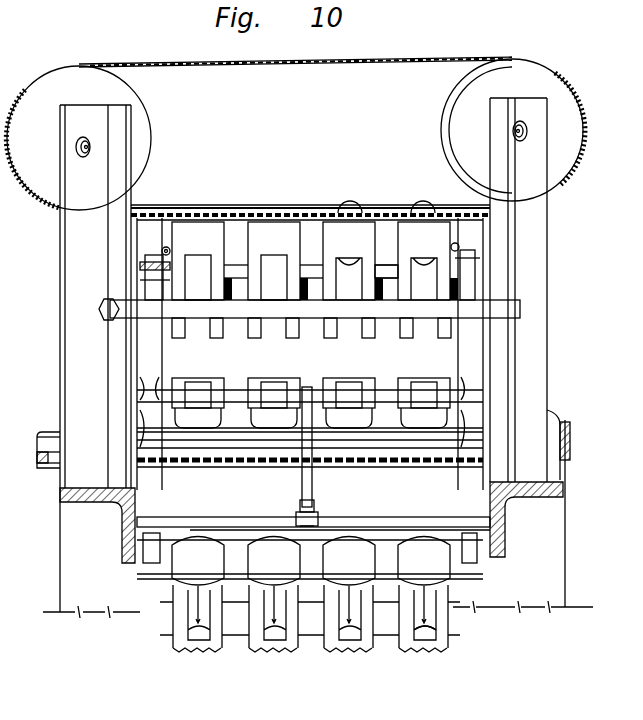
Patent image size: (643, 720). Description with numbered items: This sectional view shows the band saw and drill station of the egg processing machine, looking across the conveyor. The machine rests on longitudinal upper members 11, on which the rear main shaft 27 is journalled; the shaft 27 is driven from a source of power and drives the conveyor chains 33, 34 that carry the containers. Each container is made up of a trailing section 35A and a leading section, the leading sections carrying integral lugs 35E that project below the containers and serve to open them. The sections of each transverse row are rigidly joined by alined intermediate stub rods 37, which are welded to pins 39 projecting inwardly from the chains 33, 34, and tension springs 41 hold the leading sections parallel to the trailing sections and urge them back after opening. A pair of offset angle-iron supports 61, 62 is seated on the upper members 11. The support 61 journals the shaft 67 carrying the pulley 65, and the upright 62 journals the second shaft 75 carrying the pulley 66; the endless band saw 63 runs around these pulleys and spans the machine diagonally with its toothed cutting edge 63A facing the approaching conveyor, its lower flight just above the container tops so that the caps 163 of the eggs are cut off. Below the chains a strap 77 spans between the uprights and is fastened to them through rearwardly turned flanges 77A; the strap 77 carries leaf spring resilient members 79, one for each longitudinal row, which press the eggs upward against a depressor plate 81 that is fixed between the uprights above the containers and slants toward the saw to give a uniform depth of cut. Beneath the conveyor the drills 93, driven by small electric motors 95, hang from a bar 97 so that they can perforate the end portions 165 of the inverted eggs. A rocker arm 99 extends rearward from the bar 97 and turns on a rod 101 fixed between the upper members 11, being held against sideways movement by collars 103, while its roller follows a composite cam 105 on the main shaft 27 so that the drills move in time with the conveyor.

The longitudinal upper members 11 is at (60, 495).
The shaft 27 is at (48, 432).
The endless chain 33 is at (466, 352).
The endless chain 34 is at (150, 359).
The trailing section 35A is at (444, 235).
The integral lugs 35E is at (404, 292).
The intermediate stub rods 37 is at (316, 262).
The pins 39 is at (170, 262).
The tension springs 41 is at (163, 246).
The support 61 is at (538, 231).
The support 62 is at (72, 238).
The endless band saw 63 is at (388, 58).
The cutting or toothed edge 63A is at (36, 94).
The pulley 65 is at (466, 112).
The pulley 66 is at (106, 89).
The shaft 67 is at (528, 131).
The second shaft 75 is at (84, 158).
The strap 77 is at (237, 316).
The rearwardly turned flanges 77A is at (108, 322).
The resilient members 79 is at (282, 246).
The depressor plate 81 is at (300, 204).
The drills 93 is at (196, 618).
The electric motors 95 is at (182, 562).
The bar 97 is at (200, 517).
The rocker arm 99 is at (318, 516).
The rod 101 is at (250, 500).
The collars 103 is at (302, 518).
The composite cam 105 is at (314, 480).
The caps 163 is at (436, 208).
The end portions 165 is at (432, 630).